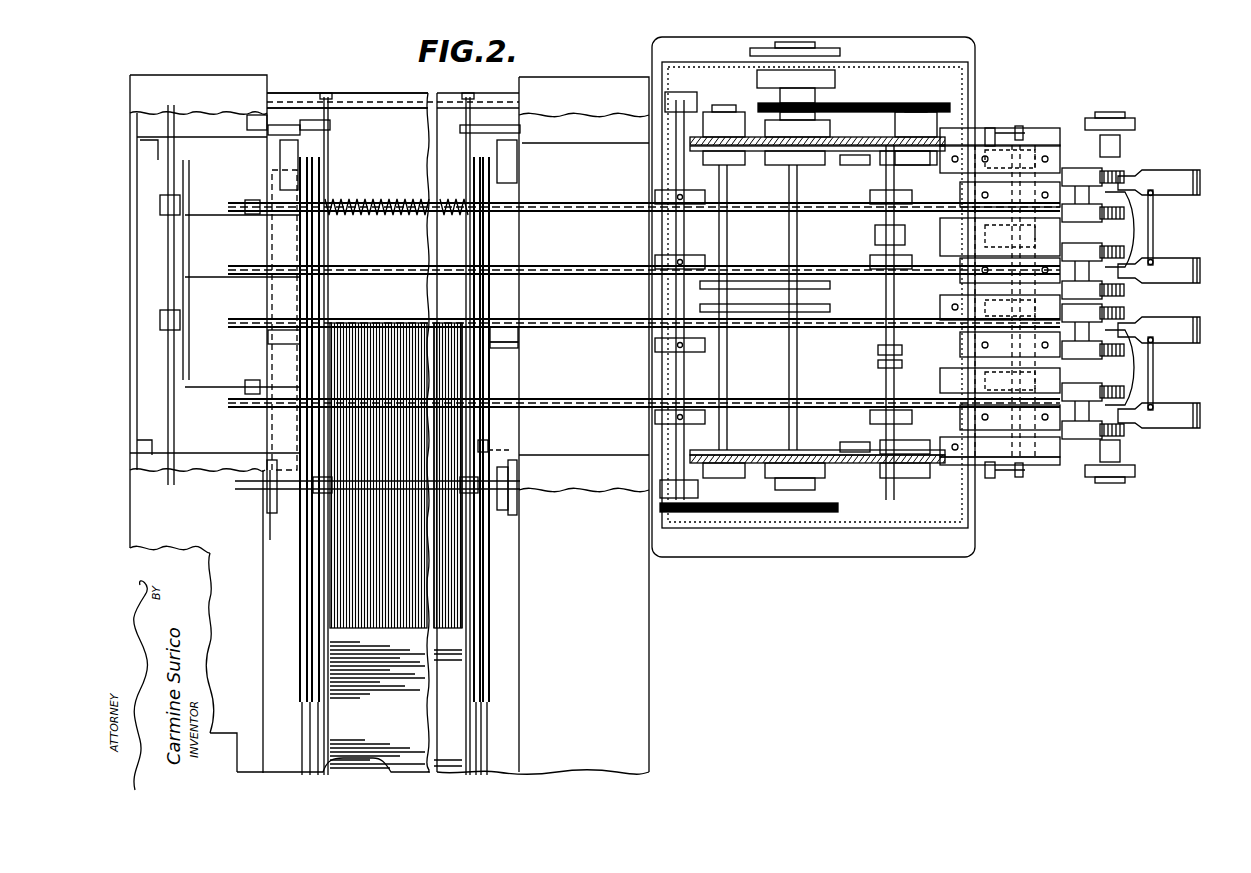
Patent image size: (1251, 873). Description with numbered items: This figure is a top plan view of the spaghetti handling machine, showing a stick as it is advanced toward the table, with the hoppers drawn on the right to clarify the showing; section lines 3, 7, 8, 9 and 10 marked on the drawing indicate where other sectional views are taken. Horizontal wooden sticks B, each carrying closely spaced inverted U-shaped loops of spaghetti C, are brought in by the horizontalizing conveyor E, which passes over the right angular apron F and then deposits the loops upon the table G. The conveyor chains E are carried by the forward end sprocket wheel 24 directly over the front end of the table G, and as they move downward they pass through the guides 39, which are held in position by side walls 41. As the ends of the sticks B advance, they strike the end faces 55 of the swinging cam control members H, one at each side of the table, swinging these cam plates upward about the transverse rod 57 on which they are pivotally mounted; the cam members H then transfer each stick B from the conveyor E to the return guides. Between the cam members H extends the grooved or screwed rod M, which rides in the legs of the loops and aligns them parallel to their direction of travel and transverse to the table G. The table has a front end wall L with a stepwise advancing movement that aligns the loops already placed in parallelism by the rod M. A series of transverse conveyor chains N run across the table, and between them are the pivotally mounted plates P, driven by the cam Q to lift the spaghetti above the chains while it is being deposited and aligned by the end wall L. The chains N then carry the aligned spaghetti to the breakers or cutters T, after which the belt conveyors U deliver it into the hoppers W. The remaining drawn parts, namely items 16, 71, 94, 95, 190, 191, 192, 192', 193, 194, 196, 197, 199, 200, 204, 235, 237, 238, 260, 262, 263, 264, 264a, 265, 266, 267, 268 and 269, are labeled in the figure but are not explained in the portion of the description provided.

The section line 3- 3 is at (318, 47).
The section line 7- 7 is at (228, 749).
The section line 8- 8 is at (178, 45).
The section line 9- 9 is at (553, 290).
The section line 10- 10 is at (832, 48).
The bracket 16 is at (280, 341).
The forward end sprocket wheel 24 is at (313, 172).
The guides 39 is at (300, 622).
The side walls 41 is at (280, 585).
The end faces 55 is at (293, 492).
The transverse rod 57 is at (479, 446).
The rail 71 is at (330, 322).
The clamp 94 is at (160, 205).
The upright post 95 is at (167, 258).
The shaft collar 190 is at (238, 198).
The bearing bracket 191 is at (258, 162).
The drive bar 192 is at (854, 305).
The collar 192' is at (863, 365).
The vertical shaft 193 is at (885, 238).
The guide strip 194 is at (450, 590).
The gear 196 is at (858, 170).
The gear plates 197 is at (700, 305).
The post 199 is at (725, 378).
The collar 200 is at (885, 383).
The post 204 is at (795, 352).
The bottom bar 235 is at (742, 515).
The block 237 is at (660, 512).
The post 238 is at (672, 432).
The bracket 260 is at (923, 442).
The bracket 262 is at (1120, 170).
The bolt 263 is at (1118, 140).
The plate 264 is at (1008, 155).
The gear 264a is at (1090, 118).
The bolt 265 is at (1053, 128).
The pin 266 is at (1028, 128).
The workpiece 267 is at (1172, 180).
The link 268 is at (1158, 222).
The output shaft 269 is at (1150, 258).
The sticks B is at (497, 345).
The loops of spaghetti C is at (403, 323).
The horizontalizing conveyor E is at (300, 730).
The right angular apron F is at (455, 667).
The table G is at (387, 112).
The swinging cam control members H is at (328, 152).
The front end wall L is at (353, 98).
The grooved or screwed rod M is at (420, 206).
The transverse conveyor chains N is at (574, 213).
The pivotally mounted plates P is at (282, 244).
The cam Q is at (190, 333).
The breakers or cutters T is at (860, 153).
The belt conveyors U is at (1028, 262).
The hoppers W is at (1199, 172).